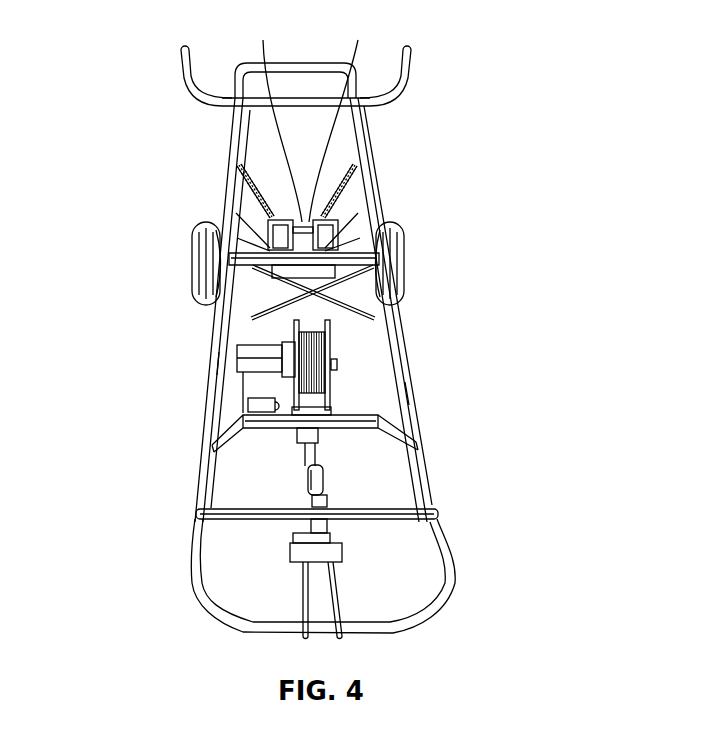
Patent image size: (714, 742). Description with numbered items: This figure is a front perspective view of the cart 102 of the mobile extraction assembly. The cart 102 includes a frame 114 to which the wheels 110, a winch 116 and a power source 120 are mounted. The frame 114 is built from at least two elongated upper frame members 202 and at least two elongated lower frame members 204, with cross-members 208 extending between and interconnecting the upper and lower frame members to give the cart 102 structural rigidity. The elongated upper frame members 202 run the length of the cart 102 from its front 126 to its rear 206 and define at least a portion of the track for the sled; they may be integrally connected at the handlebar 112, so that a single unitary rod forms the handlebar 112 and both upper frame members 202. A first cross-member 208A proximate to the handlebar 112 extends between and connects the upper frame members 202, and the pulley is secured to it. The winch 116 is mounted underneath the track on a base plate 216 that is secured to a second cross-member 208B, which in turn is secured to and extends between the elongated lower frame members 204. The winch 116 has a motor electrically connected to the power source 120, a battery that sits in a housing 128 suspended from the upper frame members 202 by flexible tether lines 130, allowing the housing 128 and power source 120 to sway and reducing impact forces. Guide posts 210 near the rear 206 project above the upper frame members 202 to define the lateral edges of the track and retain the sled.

The cart 102 is at (384, 150).
The wheels 110 is at (192, 254).
The handlebar 112 is at (230, 620).
The frame 114 is at (208, 397).
The winch 116 is at (308, 353).
The power source 120 is at (345, 119).
The front 126 is at (456, 620).
The housing 128 is at (273, 119).
The flexible tether lines 130 is at (267, 197).
The elongated upper frame members 202 is at (218, 366).
The elongated lower frame members 204 is at (235, 313).
The rear 206 is at (220, 54).
The cross-members 208 is at (340, 303).
The first cross-member 208A is at (243, 517).
The second cross-member 208B is at (345, 435).
The guide posts 210 is at (180, 62).
The base plate 216 is at (343, 412).